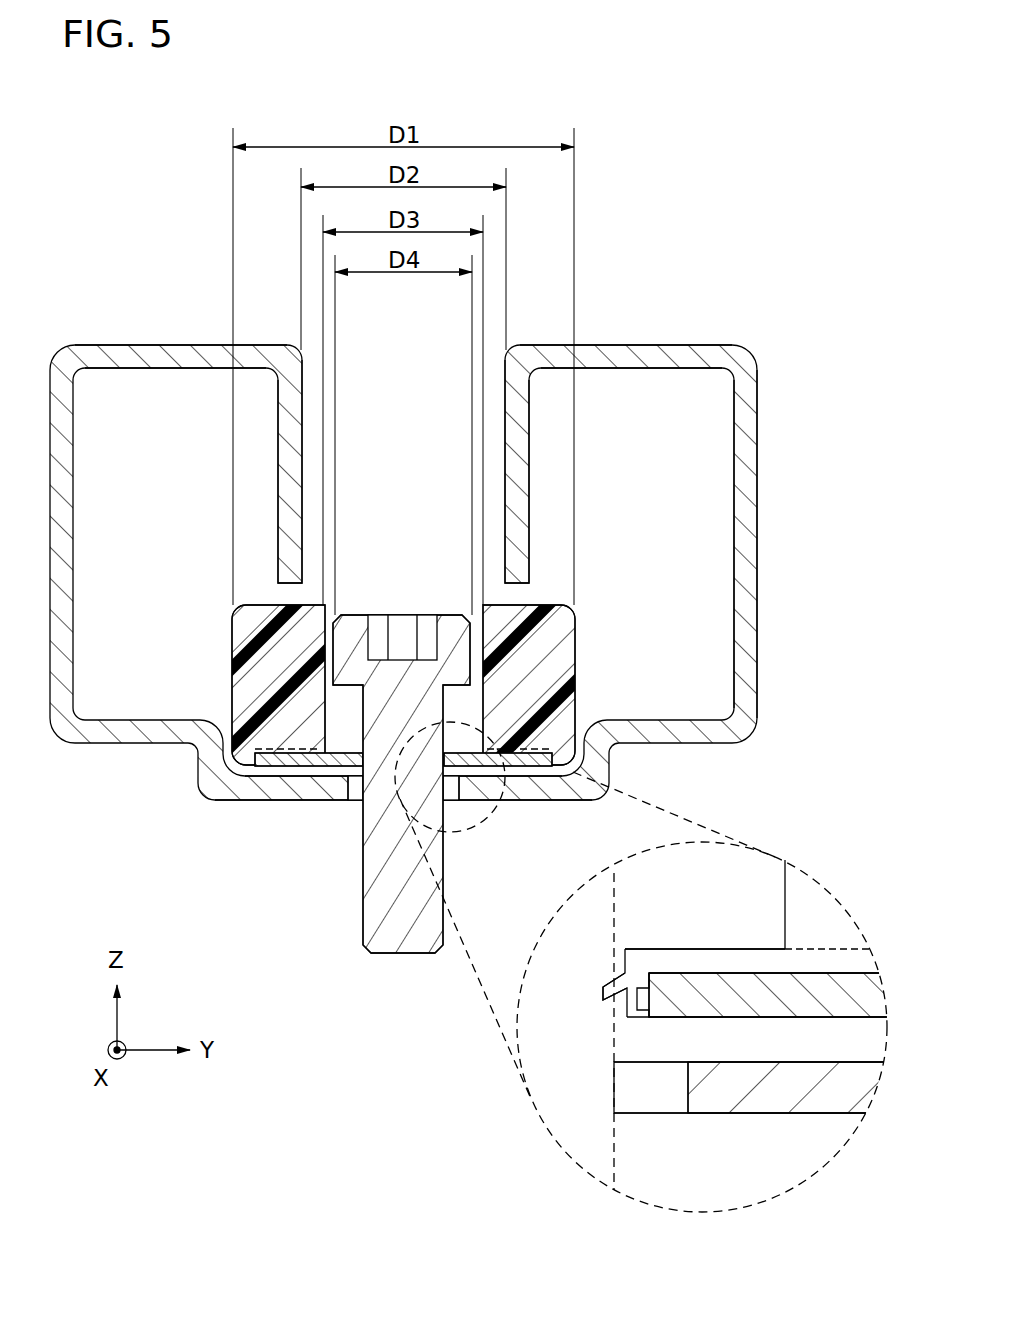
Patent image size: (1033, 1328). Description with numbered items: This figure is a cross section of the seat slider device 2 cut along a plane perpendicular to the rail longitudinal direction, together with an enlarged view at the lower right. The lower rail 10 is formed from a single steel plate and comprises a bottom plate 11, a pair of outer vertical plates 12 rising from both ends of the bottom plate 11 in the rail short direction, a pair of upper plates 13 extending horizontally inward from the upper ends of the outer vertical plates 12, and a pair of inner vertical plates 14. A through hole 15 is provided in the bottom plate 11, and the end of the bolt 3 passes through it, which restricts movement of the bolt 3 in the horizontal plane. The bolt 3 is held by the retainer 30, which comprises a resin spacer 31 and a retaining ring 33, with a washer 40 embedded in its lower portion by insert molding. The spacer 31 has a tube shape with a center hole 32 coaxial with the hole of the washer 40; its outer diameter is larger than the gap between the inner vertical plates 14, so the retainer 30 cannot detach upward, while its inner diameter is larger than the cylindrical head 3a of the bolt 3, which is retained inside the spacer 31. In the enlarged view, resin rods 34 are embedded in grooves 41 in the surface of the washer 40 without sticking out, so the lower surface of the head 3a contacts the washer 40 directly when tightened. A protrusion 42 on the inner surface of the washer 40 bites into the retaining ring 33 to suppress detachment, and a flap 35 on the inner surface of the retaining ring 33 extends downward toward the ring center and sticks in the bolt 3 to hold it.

The seat slider device 2 is at (100, 197).
The bolt 3 is at (459, 881).
The head 3a is at (362, 614).
The lower rail 10 is at (752, 340).
The bottom plate 11 is at (257, 801).
The outer vertical plates 12 is at (757, 505).
The upper plates 13 is at (120, 346).
The inner vertical plates 14 is at (280, 415).
The through hole 15 is at (352, 791).
The retainer 30 is at (540, 768).
The spacer 31 is at (565, 646).
The center hole 32 is at (313, 738).
The retaining ring 33 is at (626, 958).
The resin rods 34 is at (688, 950).
The flap 35 is at (607, 993).
The washer 40 is at (480, 767).
The grooves 41 is at (783, 960).
The protrusion 42 is at (649, 1020).